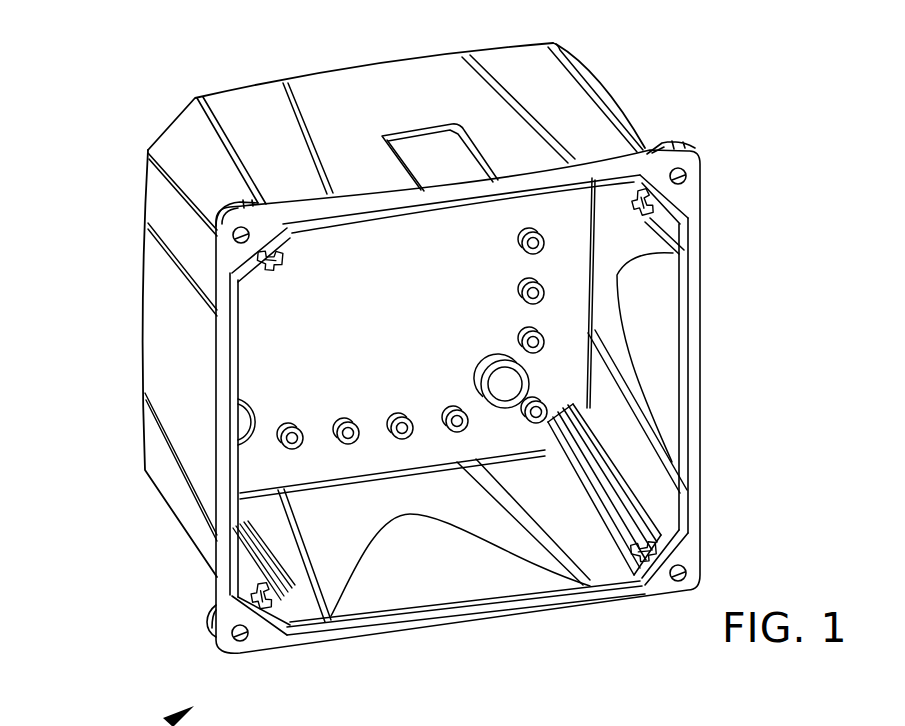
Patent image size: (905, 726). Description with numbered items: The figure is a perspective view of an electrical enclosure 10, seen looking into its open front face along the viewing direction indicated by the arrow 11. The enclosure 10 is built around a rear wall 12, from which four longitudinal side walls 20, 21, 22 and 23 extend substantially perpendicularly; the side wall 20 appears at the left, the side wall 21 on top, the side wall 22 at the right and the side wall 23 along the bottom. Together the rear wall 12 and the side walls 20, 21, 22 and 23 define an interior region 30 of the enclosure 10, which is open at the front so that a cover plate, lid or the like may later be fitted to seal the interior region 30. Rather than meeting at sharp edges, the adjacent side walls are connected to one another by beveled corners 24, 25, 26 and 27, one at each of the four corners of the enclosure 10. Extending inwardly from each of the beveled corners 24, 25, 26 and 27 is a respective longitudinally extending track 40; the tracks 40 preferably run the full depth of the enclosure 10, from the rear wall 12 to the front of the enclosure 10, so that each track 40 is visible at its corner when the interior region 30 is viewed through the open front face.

The electrical enclosure 10 is at (339, 44).
The front opening direction 11 is at (159, 707).
The rear wall 12 is at (405, 326).
The side wall 20 is at (168, 352).
The side wall 21 is at (422, 92).
The side wall 22 is at (665, 383).
The side wall 23 is at (457, 580).
The beveled corner 24 is at (182, 146).
The beveled corner 25 is at (618, 114).
The beveled corner 26 is at (637, 585).
The beveled corner 27 is at (299, 625).
The interior region 30 is at (554, 521).
The track 40 is at (664, 227).